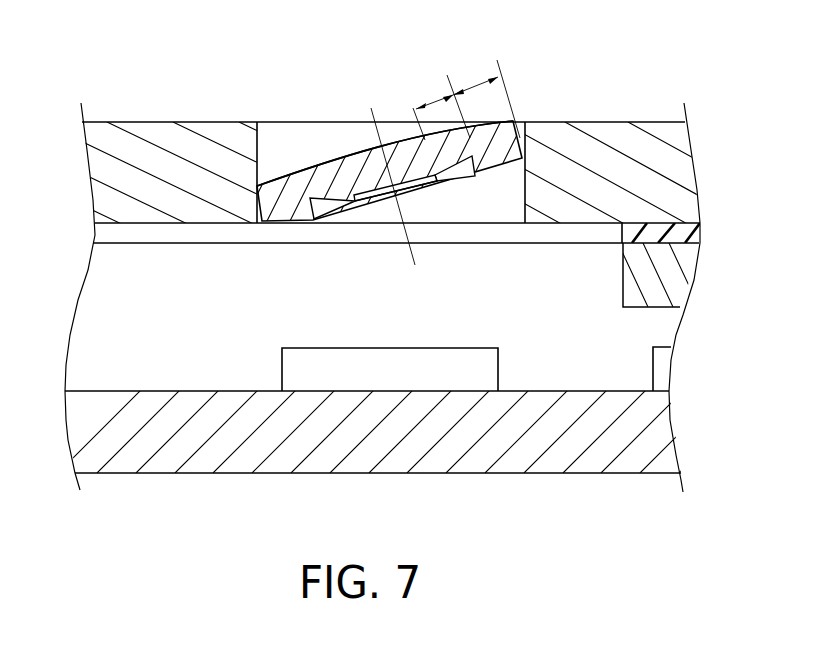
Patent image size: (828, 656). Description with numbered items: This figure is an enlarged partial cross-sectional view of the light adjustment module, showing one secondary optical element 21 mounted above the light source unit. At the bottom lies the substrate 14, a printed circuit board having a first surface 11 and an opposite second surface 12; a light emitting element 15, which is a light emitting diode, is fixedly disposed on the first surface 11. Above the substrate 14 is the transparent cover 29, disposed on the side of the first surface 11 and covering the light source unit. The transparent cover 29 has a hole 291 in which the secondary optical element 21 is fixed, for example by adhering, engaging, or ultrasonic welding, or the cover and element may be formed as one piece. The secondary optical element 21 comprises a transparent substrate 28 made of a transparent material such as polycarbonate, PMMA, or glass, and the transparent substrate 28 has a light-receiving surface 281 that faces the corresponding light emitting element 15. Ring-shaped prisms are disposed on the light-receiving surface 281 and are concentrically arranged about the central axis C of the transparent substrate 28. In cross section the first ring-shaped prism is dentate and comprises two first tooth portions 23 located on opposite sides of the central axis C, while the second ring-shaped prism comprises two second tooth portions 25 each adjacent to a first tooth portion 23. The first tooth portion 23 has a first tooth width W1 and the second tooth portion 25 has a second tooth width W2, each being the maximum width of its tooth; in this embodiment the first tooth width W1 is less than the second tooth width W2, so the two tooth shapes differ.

The first surface 11 is at (627, 391).
The second surface 12 is at (578, 476).
The substrate 14 is at (118, 467).
The light emitting element 15 is at (462, 375).
The secondary optical element 21 is at (403, 133).
The first tooth portion 23 is at (338, 204).
The second tooth portion 25 is at (297, 215).
The transparent substrate 28 is at (341, 158).
The light-receiving surface 281 is at (378, 204).
The transparent cover 29 is at (610, 130).
The hole 291 is at (262, 140).
The central axis C is at (383, 172).
The first tooth width W1 is at (440, 107).
The second tooth width W2 is at (485, 92).